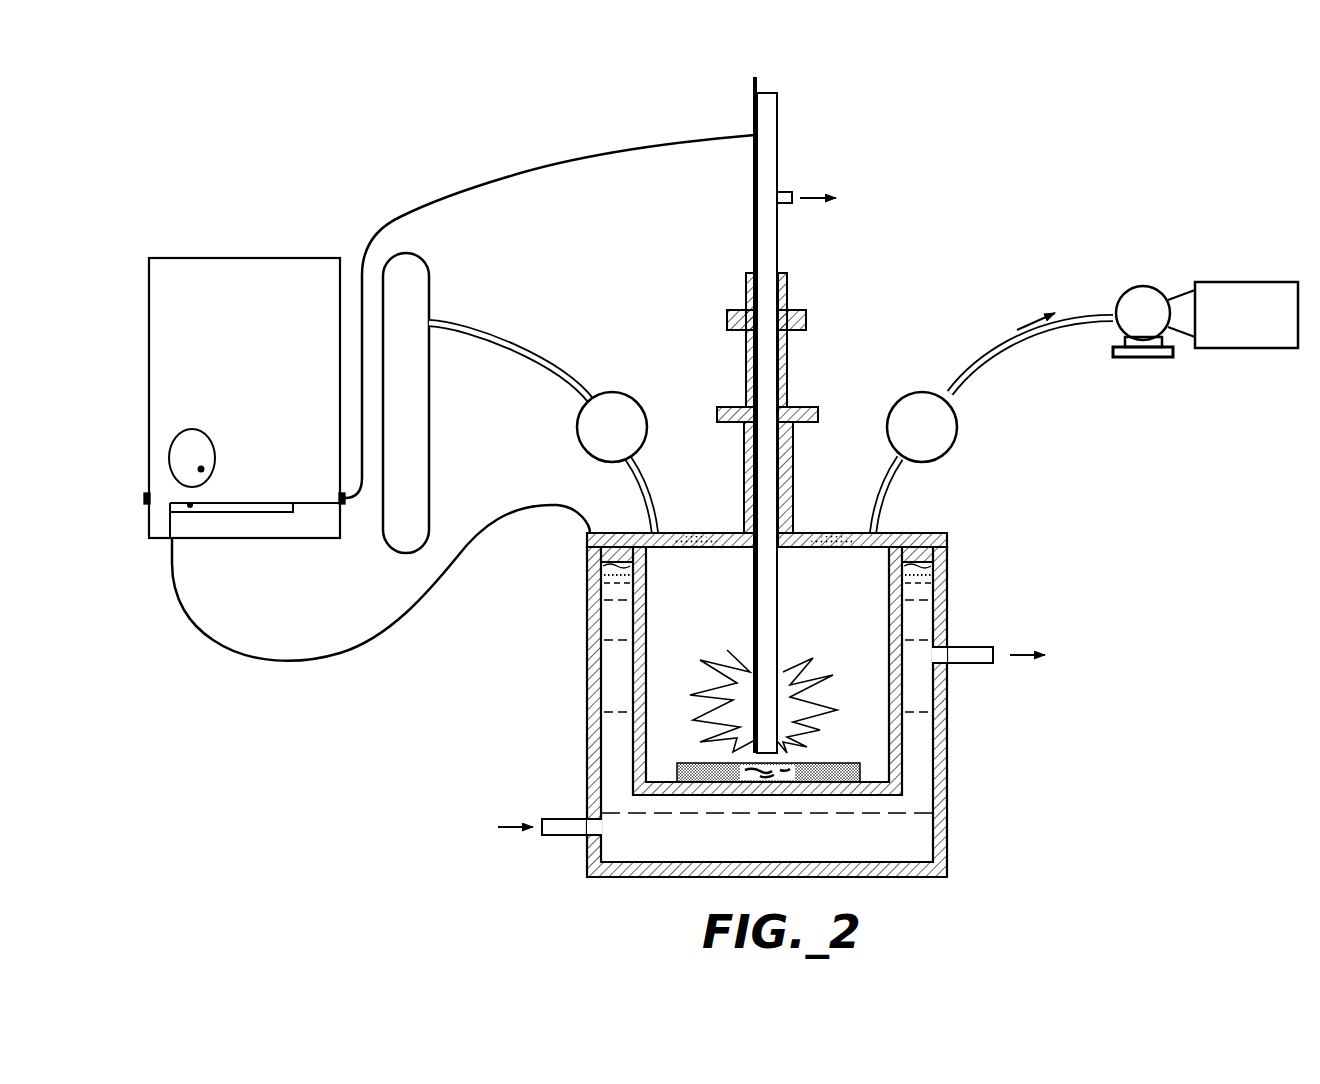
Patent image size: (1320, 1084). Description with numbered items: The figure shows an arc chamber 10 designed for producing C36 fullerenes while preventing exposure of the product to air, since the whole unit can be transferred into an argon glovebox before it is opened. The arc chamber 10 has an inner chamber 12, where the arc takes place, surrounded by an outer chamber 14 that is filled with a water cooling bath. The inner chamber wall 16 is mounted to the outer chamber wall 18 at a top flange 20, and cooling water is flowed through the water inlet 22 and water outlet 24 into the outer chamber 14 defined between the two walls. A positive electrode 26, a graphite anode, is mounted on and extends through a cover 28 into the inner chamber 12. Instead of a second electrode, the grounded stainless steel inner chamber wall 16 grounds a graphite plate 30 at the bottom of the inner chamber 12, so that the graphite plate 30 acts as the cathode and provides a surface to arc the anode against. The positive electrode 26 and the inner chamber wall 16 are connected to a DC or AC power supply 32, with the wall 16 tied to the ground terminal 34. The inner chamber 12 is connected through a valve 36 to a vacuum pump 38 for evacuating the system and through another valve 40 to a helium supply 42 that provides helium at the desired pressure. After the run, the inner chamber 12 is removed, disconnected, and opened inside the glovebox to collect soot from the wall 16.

The arc chamber 10 is at (1163, 560).
The inner chamber 12 is at (844, 617).
The outer chamber 14 is at (774, 851).
The inner chamber wall 16 is at (650, 628).
The outer chamber wall 18 is at (948, 600).
The top flange 20 is at (947, 535).
The water inlet 22 is at (560, 837).
The water outlet 24 is at (970, 663).
The positive electrode 26 is at (838, 129).
The cover 28 is at (836, 533).
The graphite plate 30 is at (680, 754).
The power supply 32 is at (230, 258).
The ground terminal 34 is at (257, 668).
The valve 36 is at (916, 355).
The vacuum pump 38 is at (1223, 282).
The valve 40 is at (607, 392).
The helium supply 42 is at (430, 288).